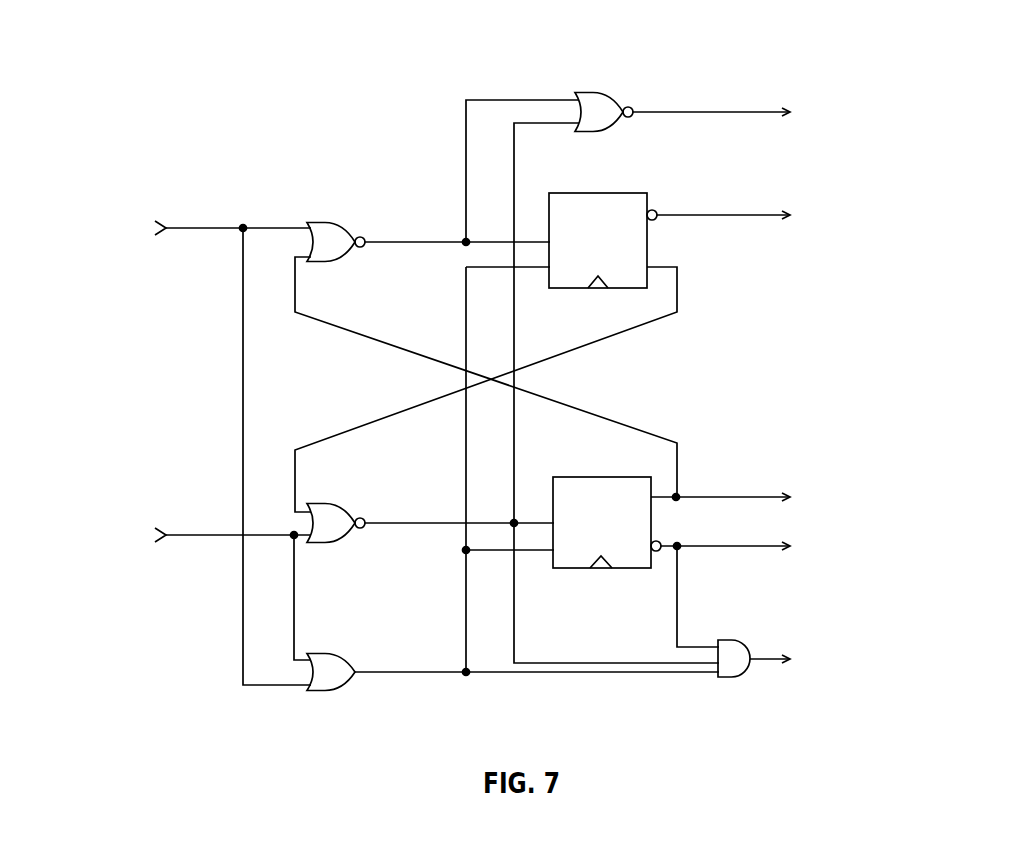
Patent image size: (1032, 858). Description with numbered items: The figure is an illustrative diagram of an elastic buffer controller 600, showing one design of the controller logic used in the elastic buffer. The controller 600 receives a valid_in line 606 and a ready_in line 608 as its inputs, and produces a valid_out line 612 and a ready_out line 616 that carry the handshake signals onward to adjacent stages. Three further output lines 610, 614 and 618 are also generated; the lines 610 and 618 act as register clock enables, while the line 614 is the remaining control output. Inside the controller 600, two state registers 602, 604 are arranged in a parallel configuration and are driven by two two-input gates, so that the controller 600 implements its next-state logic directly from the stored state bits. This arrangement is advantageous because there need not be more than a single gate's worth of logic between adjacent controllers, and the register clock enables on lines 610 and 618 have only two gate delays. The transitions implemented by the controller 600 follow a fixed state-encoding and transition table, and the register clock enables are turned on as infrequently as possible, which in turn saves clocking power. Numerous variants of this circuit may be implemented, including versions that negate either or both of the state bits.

The controller 600 is at (255, 128).
The first flip-flop 602 is at (585, 193).
The second flip-flop 604 is at (588, 477).
The valid_in line 606 is at (200, 228).
The ready_in line 608 is at (200, 535).
The output line 610 is at (748, 111).
The valid_out line 612 is at (729, 214).
The output line 614 is at (775, 497).
The ready_out line 616 is at (753, 549).
The output line 618 is at (770, 658).